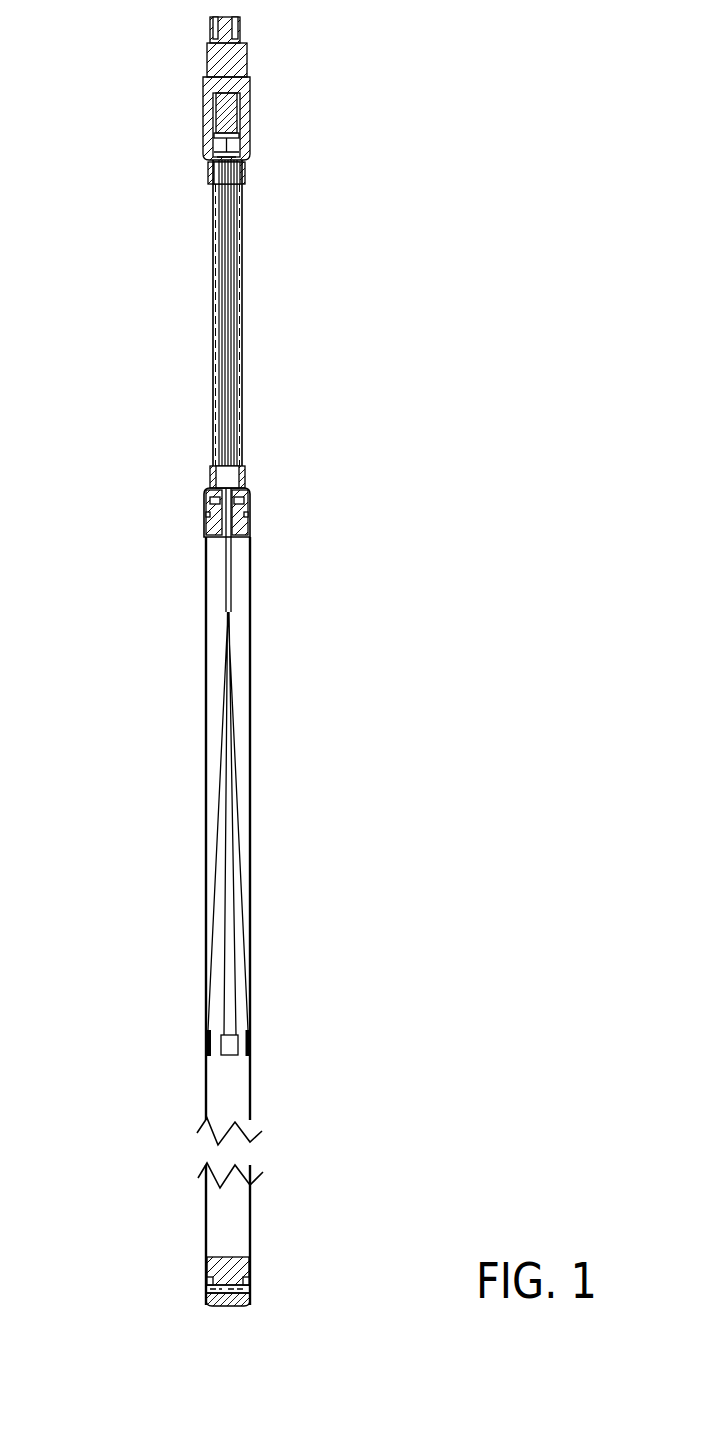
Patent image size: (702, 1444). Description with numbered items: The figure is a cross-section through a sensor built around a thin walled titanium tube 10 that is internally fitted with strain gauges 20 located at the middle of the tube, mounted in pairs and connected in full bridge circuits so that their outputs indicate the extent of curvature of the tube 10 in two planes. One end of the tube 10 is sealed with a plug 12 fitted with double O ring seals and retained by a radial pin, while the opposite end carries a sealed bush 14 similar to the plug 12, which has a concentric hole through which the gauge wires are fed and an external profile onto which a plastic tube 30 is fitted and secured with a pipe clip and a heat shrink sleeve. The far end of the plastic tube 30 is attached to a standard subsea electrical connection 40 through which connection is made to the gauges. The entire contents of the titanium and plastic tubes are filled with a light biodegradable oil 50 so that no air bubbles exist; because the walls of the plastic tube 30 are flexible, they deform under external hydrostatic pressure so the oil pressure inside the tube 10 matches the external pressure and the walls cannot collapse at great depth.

The thin walled titanium tube 10 is at (183, 585).
The plug 12 is at (250, 1265).
The sealed bush 14 is at (246, 530).
The strain gauges 20 is at (228, 1045).
The plastic tube 30 is at (292, 315).
The subsea electrical connection 40 is at (205, 65).
The light biodegradable oil 50 is at (217, 921).